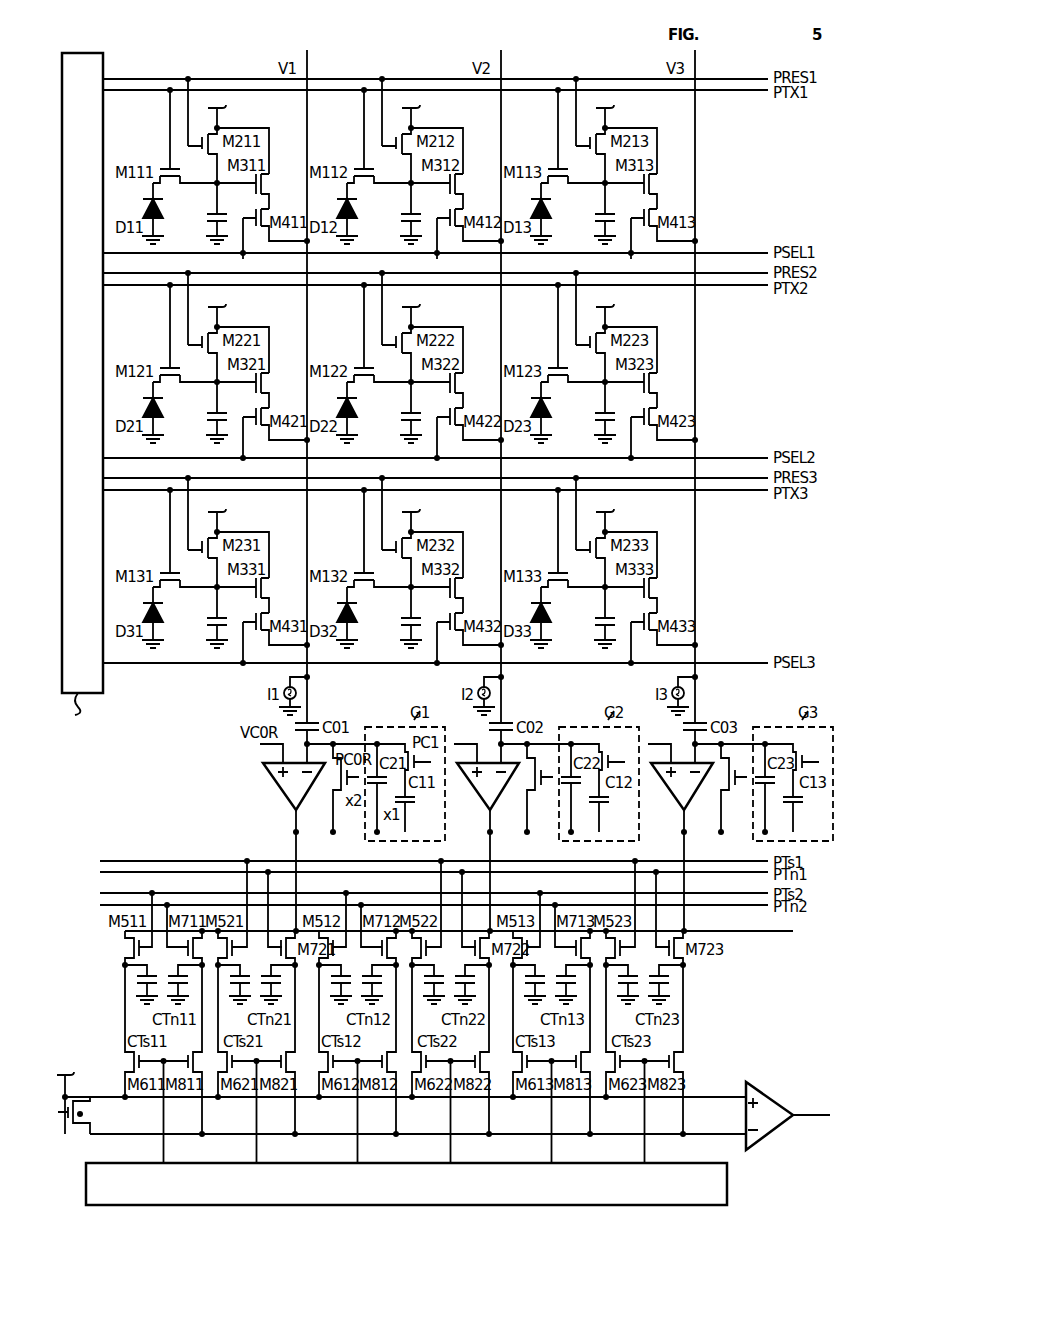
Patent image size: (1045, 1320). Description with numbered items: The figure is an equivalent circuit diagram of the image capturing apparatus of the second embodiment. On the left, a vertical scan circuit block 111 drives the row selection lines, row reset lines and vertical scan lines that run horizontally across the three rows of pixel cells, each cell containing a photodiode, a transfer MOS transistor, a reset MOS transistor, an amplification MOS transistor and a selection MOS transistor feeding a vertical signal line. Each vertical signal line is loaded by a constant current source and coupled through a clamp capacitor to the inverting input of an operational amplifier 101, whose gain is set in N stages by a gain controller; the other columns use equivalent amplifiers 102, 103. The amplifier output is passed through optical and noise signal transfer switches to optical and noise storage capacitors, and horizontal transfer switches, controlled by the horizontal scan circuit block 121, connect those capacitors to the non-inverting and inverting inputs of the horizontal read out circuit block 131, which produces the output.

The vertical scan circuit block 111 is at (93, 393).
The operational amplifier 101 is at (277, 783).
The amplifier (column 2) 102 is at (471, 783).
The amplifier (column 3) 103 is at (665, 783).
The horizontal read out circuit block 131 is at (771, 1095).
The horizontal scan circuit block 121 is at (727, 1183).